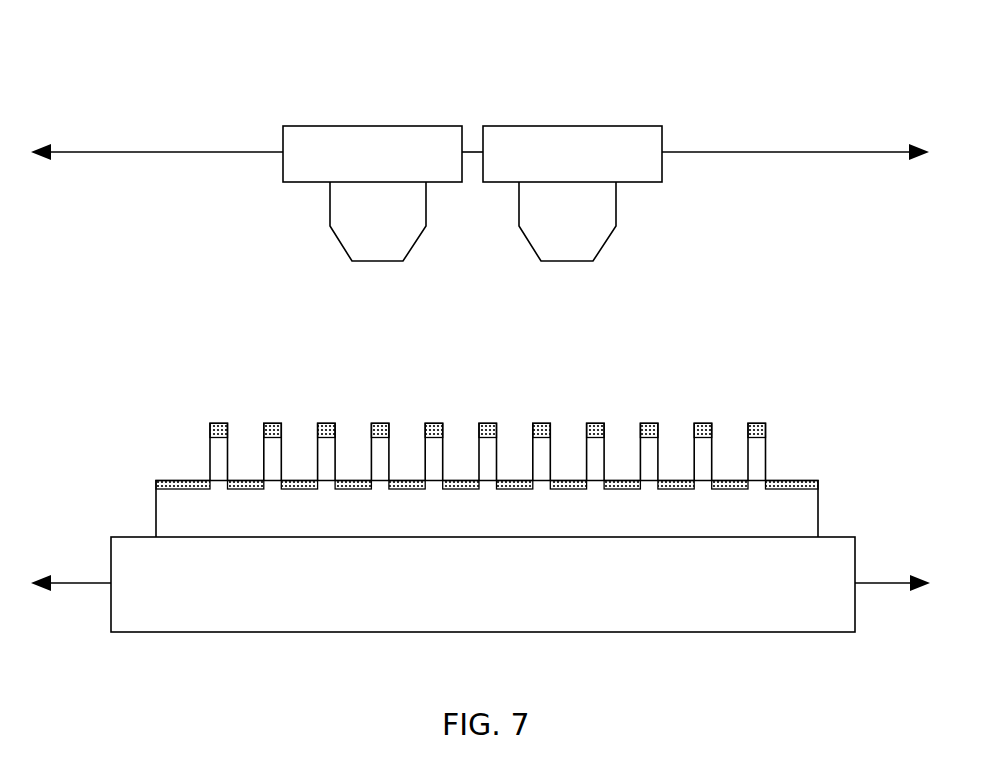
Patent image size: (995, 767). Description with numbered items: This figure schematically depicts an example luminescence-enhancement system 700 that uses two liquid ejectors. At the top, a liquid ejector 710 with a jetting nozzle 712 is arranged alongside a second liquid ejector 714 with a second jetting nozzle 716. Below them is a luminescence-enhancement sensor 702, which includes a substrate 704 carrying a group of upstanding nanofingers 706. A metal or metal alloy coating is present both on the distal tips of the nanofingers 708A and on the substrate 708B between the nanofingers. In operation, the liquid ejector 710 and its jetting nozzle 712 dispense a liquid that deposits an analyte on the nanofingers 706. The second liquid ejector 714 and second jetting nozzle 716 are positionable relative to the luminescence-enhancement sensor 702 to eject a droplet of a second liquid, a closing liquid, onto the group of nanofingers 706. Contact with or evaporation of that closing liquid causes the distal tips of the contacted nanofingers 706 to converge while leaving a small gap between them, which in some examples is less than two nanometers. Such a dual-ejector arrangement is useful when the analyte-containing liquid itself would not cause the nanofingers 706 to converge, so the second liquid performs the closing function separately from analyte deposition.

The luminescence-enhancement system 700 is at (361, 87).
The liquid ejector 710 is at (372, 154).
The jetting nozzle 712 is at (378, 221).
The second liquid ejector 714 is at (572, 154).
The second jetting nozzle 716 is at (567, 221).
The luminescence-enhancement sensor 702 is at (131, 484).
The substrate 704 is at (487, 509).
The nanofingers 706 is at (217, 457).
The metal or metal alloy coating on distal tips of the nanofingers 708A is at (278, 430).
The metal or metal alloy coating on the substrate 708B is at (818, 481).